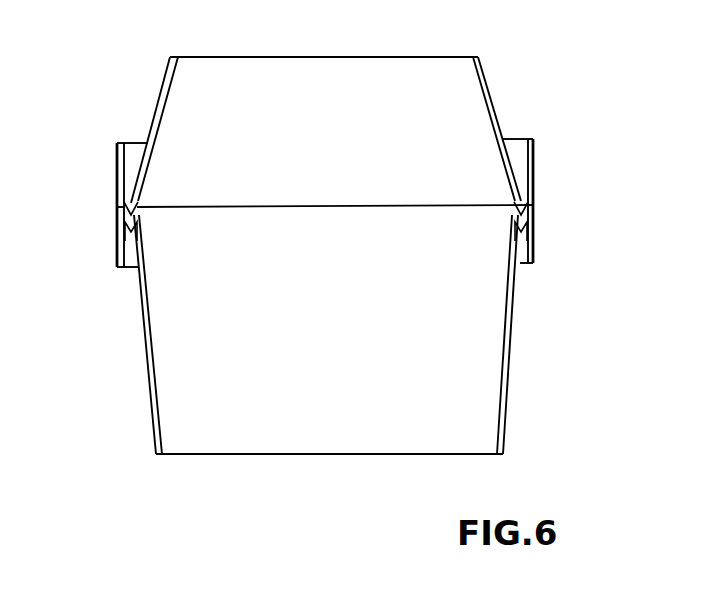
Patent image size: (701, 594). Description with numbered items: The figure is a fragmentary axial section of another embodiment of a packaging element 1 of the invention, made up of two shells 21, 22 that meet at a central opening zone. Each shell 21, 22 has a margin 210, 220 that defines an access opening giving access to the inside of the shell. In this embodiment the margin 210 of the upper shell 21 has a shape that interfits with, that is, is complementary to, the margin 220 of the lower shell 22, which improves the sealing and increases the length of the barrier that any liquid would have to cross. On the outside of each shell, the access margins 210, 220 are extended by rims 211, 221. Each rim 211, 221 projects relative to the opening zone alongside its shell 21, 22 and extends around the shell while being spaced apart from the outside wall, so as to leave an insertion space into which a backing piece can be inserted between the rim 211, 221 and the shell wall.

The housing 1 is at (514, 64).
The shell 21 is at (340, 78).
The shell 22 is at (180, 397).
The margin 210 is at (138, 203).
The margin 220 is at (138, 220).
The rim 211 is at (118, 160).
The rim 221 is at (118, 270).